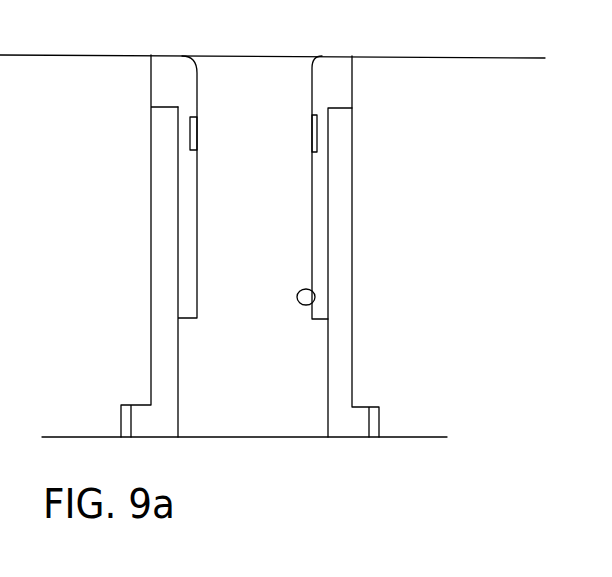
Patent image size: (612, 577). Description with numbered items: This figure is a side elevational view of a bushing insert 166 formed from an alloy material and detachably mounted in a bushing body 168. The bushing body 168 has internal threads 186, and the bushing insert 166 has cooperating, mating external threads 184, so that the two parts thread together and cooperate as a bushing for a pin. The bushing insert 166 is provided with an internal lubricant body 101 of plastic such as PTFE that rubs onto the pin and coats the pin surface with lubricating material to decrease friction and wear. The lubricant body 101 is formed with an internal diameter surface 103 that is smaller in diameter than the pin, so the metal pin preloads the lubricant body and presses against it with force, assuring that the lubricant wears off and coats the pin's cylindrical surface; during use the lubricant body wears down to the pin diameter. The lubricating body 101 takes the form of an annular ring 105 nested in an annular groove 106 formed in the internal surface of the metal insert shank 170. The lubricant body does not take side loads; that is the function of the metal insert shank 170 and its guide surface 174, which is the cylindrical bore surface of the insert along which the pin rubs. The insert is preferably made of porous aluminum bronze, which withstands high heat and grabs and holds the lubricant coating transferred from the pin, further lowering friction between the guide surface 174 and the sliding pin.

The internal lubricant body 101 is at (199, 129).
The internal diameter surface 103 is at (197, 143).
The annular ring 105 is at (317, 137).
The annular groove 106 is at (195, 117).
The bushing insert 166 is at (317, 268).
The bushing body 168 is at (333, 364).
The metal insert shank 170 is at (318, 192).
The guide surface 174 is at (301, 290).
The external threads 184 is at (178, 224).
The internal threads 186 is at (178, 258).